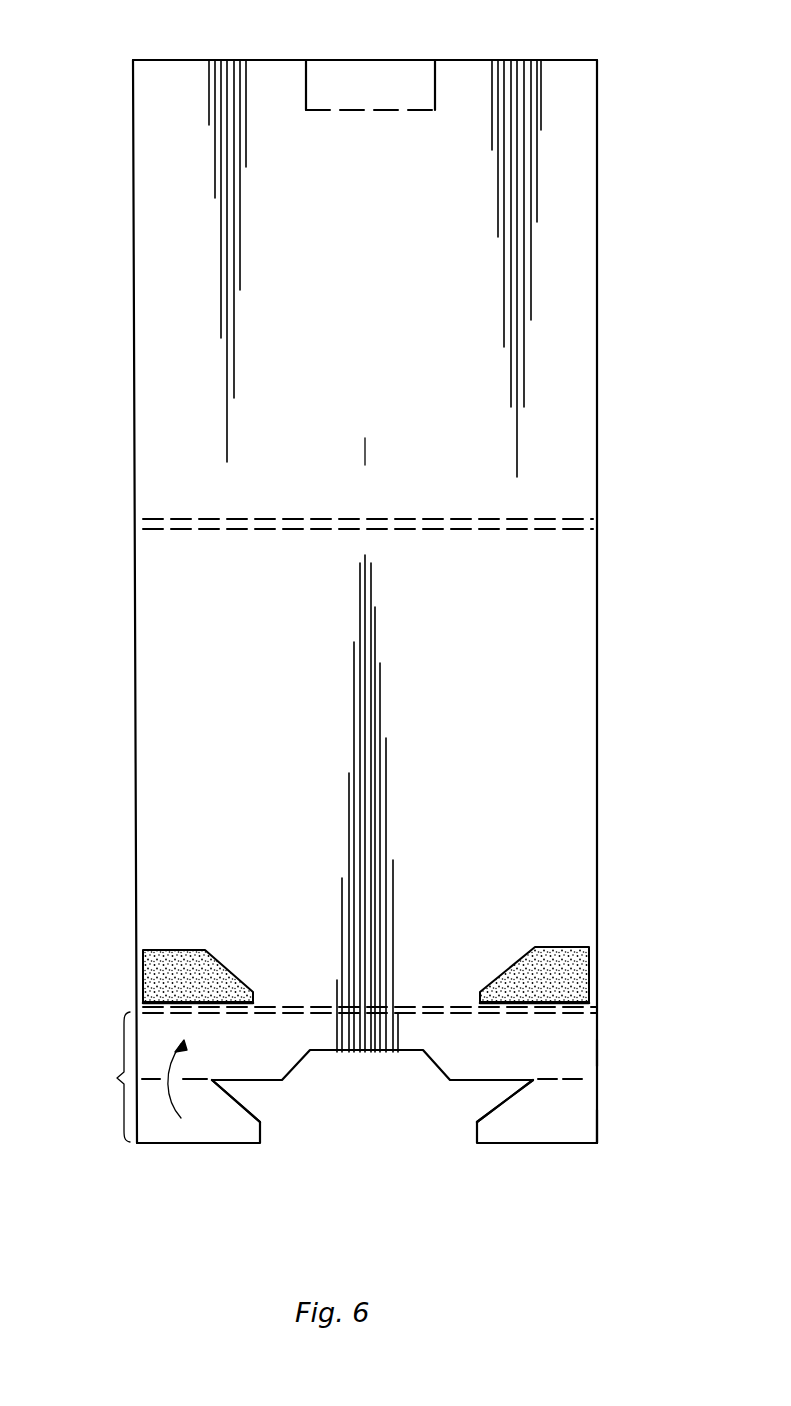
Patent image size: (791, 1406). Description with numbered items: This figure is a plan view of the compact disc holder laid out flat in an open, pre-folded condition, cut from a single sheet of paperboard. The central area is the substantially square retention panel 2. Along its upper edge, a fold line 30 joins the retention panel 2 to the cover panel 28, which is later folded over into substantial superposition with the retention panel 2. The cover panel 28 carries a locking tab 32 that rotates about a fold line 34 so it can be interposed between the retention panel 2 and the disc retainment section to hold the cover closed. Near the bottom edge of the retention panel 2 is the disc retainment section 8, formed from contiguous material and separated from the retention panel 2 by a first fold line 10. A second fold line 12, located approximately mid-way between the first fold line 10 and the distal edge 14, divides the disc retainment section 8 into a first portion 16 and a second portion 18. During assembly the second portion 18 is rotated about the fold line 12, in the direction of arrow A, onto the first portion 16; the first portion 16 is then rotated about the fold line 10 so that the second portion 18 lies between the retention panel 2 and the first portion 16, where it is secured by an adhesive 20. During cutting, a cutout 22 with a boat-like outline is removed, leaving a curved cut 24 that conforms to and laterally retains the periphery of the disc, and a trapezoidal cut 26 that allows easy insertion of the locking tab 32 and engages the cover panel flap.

The retention panel 2 is at (597, 806).
The disc retainment section 8 is at (108, 1077).
The first fold line 10 is at (597, 1008).
The fold line 12 is at (592, 1072).
The distal edge 14 is at (210, 1145).
The first portion 16 is at (593, 1058).
The second portion 18 is at (580, 1125).
The adhesive 20 is at (145, 977).
The cutout 22 is at (351, 1134).
The curved cut 24 is at (243, 1103).
The trapezoidal cut 26 is at (388, 1050).
The cover panel 28 is at (597, 345).
The fold line 30 is at (597, 522).
The locking tab 32 is at (377, 60).
The fold line 34 is at (398, 110).
The arrow A is at (162, 1103).